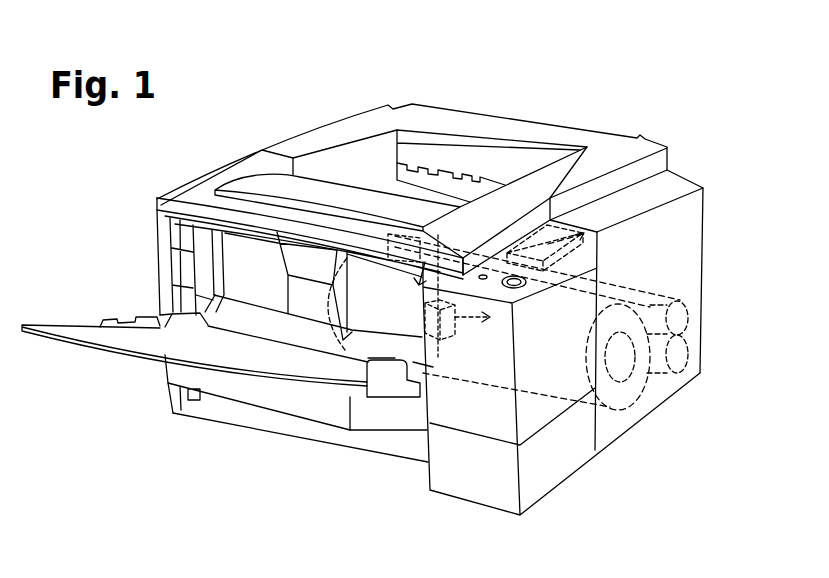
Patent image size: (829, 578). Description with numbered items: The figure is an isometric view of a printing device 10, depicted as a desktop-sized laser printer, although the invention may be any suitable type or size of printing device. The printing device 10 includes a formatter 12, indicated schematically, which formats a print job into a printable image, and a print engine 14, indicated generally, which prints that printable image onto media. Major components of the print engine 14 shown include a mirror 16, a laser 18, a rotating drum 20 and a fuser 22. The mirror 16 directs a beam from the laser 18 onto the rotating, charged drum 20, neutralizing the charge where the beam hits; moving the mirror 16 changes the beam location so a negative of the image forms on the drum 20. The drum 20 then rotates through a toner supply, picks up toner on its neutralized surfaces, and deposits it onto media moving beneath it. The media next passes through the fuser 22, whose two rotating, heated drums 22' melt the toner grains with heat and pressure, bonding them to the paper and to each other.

The printing device 10 is at (148, 142).
The formatter 12 is at (572, 218).
The print engine 14 is at (622, 415).
The mirror 16 is at (455, 326).
The laser 18 is at (447, 240).
The rotating drum 20 is at (643, 388).
The fuser 22 is at (702, 367).
The heated drums 22' is at (716, 347).